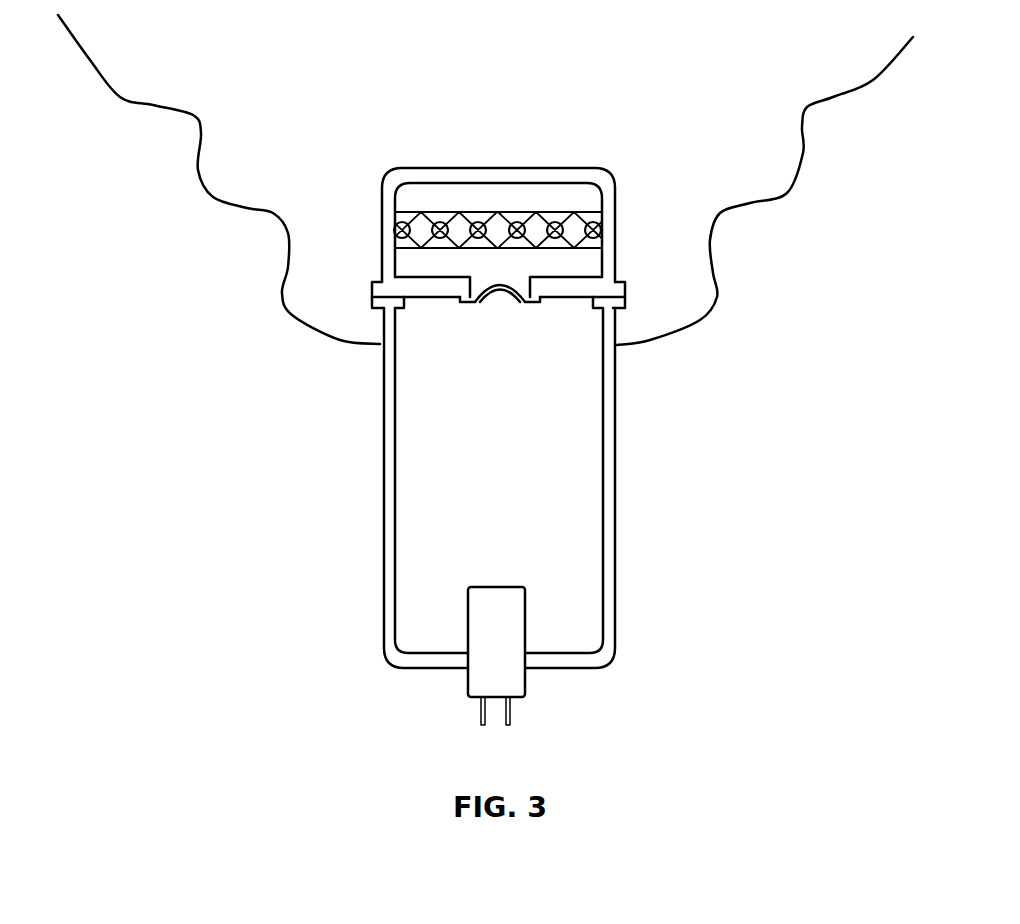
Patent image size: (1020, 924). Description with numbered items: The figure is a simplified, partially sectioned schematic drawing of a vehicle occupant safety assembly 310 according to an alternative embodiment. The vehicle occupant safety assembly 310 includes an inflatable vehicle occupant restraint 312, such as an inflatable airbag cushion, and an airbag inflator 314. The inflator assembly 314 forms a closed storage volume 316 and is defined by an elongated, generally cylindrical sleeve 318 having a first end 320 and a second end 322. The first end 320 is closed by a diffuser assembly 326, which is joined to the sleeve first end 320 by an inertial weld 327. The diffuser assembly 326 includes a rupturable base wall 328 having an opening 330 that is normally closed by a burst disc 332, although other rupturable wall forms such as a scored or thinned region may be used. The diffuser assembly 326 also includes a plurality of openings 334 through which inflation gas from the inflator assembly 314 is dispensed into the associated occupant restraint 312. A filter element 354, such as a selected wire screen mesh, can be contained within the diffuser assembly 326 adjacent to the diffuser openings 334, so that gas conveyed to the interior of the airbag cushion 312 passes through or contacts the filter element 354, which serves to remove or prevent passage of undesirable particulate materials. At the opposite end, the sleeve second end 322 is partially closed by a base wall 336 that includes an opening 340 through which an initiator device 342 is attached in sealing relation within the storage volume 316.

The vehicle occupant safety assembly 310 is at (268, 410).
The inflatable vehicle occupant restraint 312 is at (193, 115).
The airbag inflator 314 is at (503, 514).
The storage volume 316 is at (576, 514).
The sleeve 318 is at (612, 577).
The first end 320 is at (502, 314).
The second end 322 is at (427, 664).
The diffuser assembly 326 is at (692, 168).
The inertial weld 327 is at (360, 292).
The rupturable base wall 328 is at (568, 293).
The opening 330 is at (443, 298).
The burst disc 332 is at (490, 298).
The openings 334 is at (512, 162).
The base wall 336 is at (563, 658).
The opening 340 is at (466, 664).
The initiator device 342 is at (502, 610).
The filter element 354 is at (568, 230).